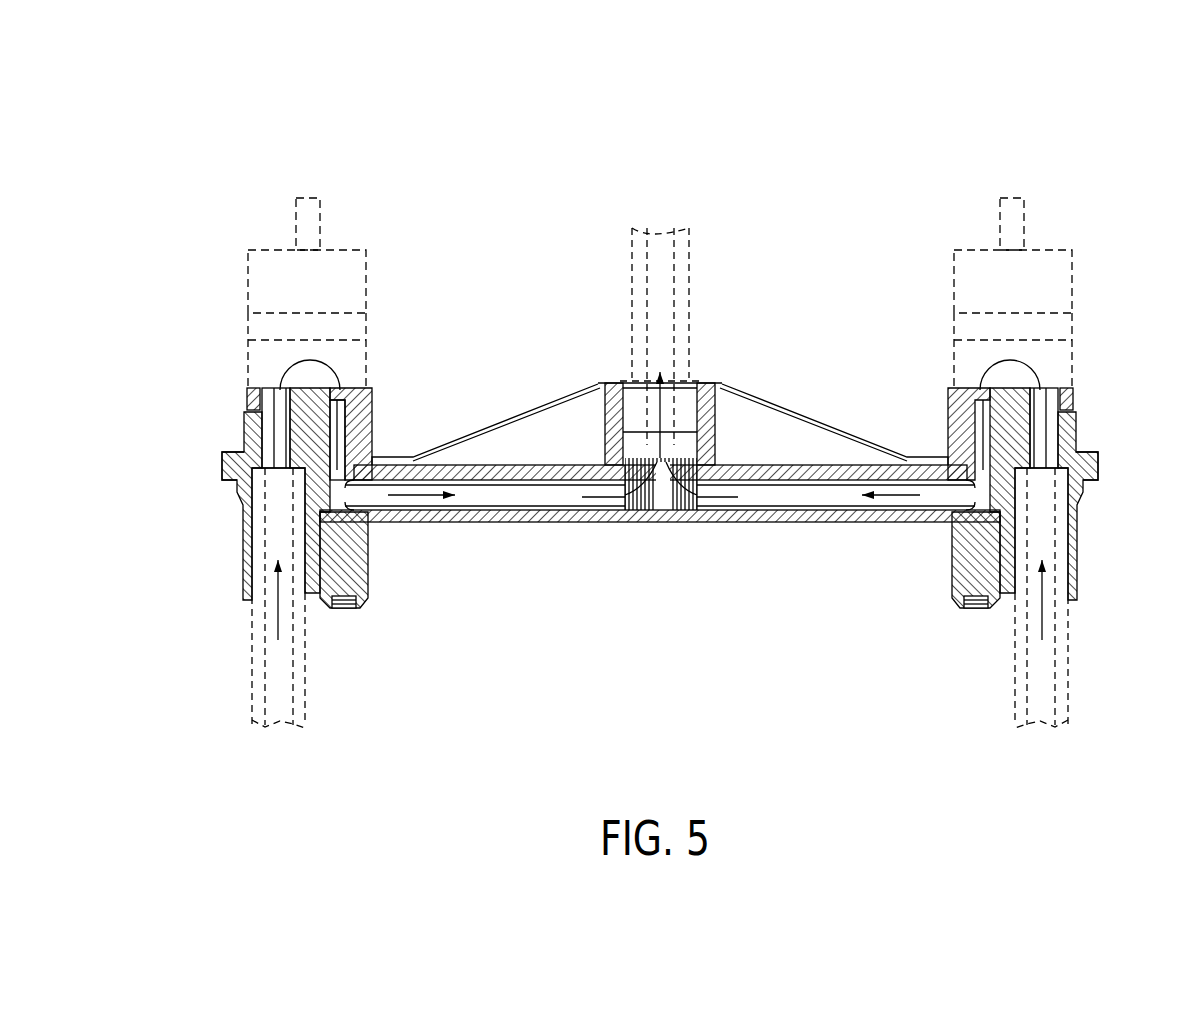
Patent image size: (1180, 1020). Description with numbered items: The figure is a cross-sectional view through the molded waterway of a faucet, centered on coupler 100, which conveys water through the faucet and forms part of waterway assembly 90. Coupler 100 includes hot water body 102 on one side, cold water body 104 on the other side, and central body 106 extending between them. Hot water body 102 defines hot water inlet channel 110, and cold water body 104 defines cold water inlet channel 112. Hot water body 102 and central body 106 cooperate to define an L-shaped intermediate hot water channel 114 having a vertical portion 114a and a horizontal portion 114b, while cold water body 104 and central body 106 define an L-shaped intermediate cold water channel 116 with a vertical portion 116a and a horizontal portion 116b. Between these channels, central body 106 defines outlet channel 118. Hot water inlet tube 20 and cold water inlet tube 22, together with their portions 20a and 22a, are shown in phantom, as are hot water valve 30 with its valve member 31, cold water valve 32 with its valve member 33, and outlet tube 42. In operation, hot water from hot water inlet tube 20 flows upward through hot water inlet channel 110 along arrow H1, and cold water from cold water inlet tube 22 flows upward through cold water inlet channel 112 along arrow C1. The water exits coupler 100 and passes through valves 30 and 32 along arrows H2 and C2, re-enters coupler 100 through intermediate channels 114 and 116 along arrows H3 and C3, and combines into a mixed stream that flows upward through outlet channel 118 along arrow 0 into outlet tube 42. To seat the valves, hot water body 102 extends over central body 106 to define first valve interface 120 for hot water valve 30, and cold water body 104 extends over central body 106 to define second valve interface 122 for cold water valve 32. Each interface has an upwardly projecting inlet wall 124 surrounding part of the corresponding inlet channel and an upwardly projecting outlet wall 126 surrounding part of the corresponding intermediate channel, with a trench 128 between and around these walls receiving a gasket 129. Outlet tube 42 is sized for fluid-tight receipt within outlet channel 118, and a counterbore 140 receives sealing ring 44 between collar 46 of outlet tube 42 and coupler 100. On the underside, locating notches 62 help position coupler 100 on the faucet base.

The hot water valve 30 is at (316, 141).
The valve member 31 is at (342, 332).
The cold water valve 32 is at (1015, 178).
The valve member 33 is at (1044, 328).
The coupler 100 is at (800, 222).
The outlet tube 42 is at (684, 243).
The collar 46 is at (698, 360).
The sealing ring 44 is at (632, 385).
The counterbore 140 is at (696, 382).
The outlet channel 118 is at (650, 440).
The intermediate hot water channel 114 is at (400, 500).
The vertical portion 114a is at (340, 408).
The horizontal portion 114b is at (468, 500).
The intermediate cold water channel 116 is at (850, 500).
The vertical portion 116a is at (985, 438).
The horizontal portion 116b is at (823, 502).
The outlet wall 126 is at (350, 420).
The trench 128 is at (385, 400).
The gasket 129 is at (278, 440).
The first valve interface 120 is at (300, 390).
The second valve interface 122 is at (1057, 388).
The inlet wall 124 is at (258, 402).
The hot water inlet channel 110 is at (302, 405).
The cold water inlet channel 112 is at (1085, 462).
The hot water body 102 is at (240, 520).
The cold water body 104 is at (1080, 497).
The central body 106 is at (565, 522).
The arrow O 0 is at (725, 500).
The locating notches 62 is at (342, 617).
The hot water inlet tube 20 is at (308, 694).
The tube end 20a is at (322, 648).
The cold water inlet tube 22 is at (1017, 708).
The tube end 22a is at (1007, 613).
The waterway assembly 90 is at (225, 712).
The arrow H1 is at (277, 622).
The arrow H2 is at (280, 402).
The arrow H3 is at (421, 451).
The arrow C1 is at (1043, 603).
The arrow C2 is at (1043, 402).
The arrow C3 is at (918, 495).